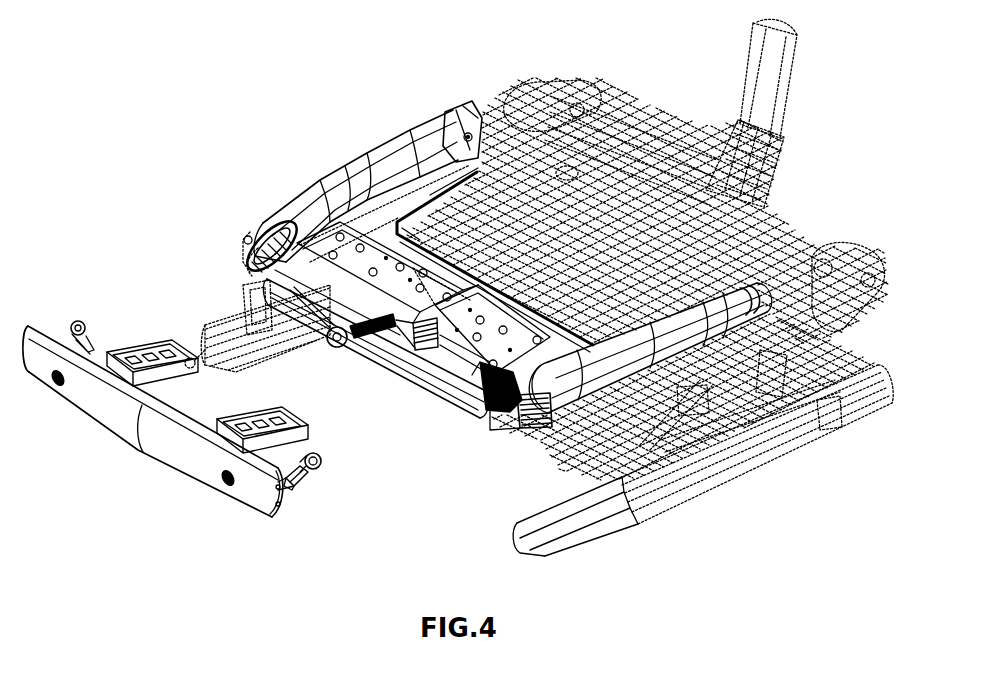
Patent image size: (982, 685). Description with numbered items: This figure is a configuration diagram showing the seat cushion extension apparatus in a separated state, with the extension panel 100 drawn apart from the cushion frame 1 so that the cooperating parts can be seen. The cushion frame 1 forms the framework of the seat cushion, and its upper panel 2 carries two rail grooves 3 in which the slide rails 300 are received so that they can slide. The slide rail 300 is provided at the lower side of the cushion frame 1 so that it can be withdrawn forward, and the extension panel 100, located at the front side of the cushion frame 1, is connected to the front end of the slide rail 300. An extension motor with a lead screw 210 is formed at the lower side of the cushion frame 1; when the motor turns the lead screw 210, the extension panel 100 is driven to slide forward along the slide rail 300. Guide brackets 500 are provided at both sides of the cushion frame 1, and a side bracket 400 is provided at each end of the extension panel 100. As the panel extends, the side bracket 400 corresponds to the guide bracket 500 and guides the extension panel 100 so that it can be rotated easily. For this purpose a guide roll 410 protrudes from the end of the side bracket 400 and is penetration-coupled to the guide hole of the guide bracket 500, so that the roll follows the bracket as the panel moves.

The cushion frame 1 is at (403, 122).
The upper panel 2 is at (297, 193).
The rail groove 3 is at (432, 365).
The guide bracket 500 is at (262, 222).
The lead screw 210 is at (357, 344).
The slide rail 300 is at (312, 422).
The extension panel 100 is at (176, 458).
The side bracket 400 is at (300, 492).
The guide roll 410 is at (320, 470).